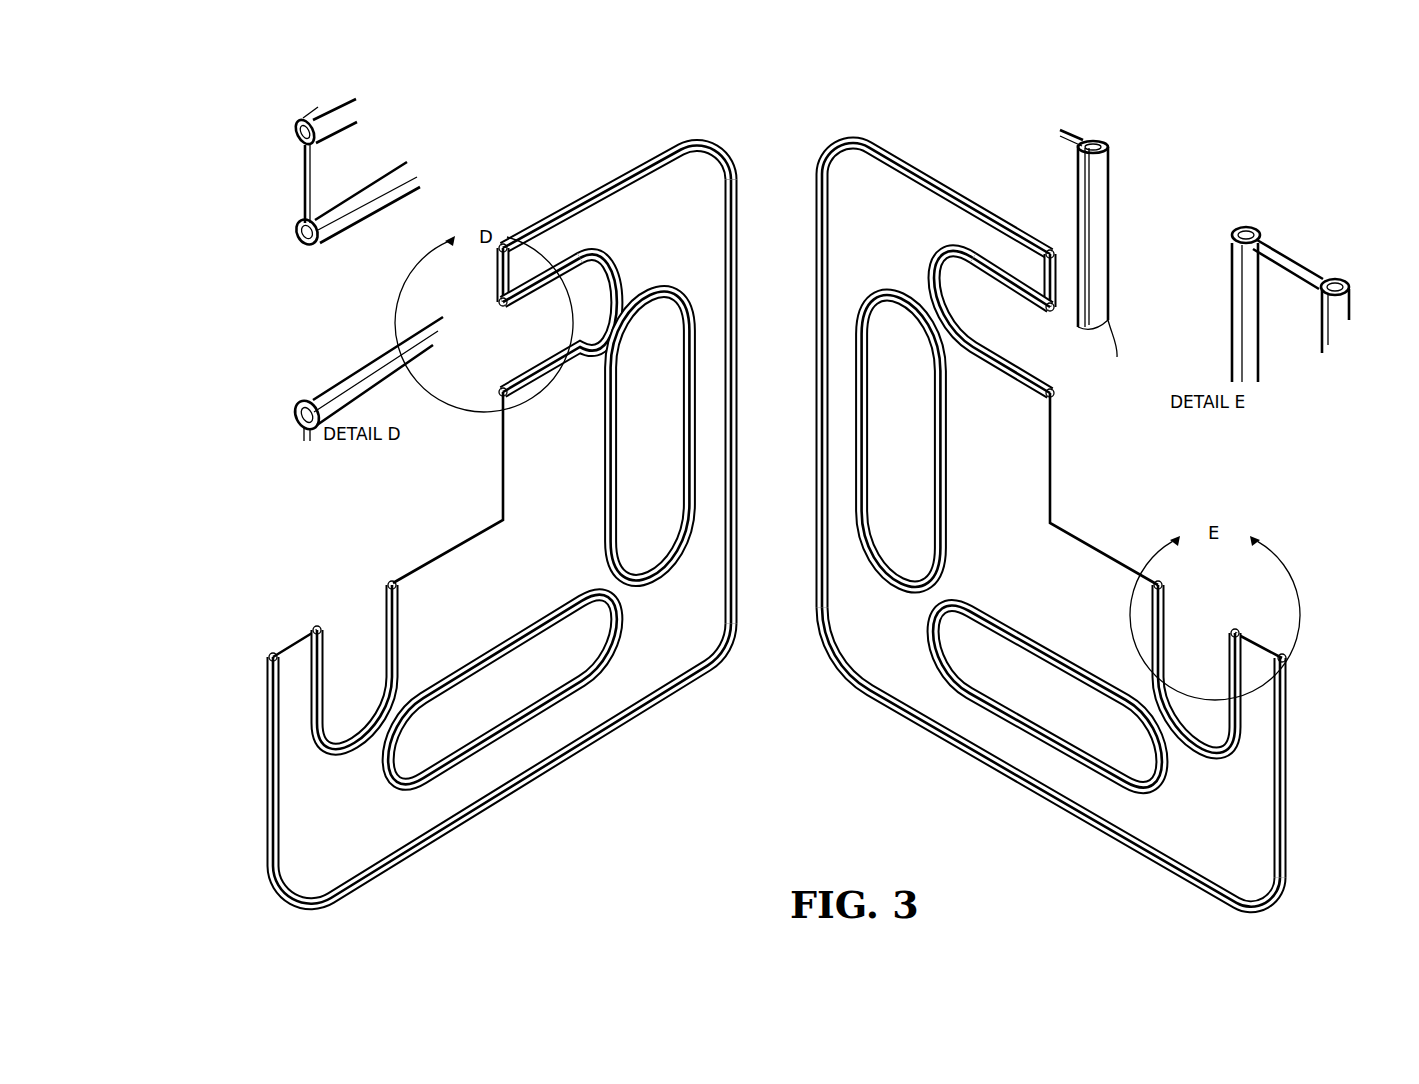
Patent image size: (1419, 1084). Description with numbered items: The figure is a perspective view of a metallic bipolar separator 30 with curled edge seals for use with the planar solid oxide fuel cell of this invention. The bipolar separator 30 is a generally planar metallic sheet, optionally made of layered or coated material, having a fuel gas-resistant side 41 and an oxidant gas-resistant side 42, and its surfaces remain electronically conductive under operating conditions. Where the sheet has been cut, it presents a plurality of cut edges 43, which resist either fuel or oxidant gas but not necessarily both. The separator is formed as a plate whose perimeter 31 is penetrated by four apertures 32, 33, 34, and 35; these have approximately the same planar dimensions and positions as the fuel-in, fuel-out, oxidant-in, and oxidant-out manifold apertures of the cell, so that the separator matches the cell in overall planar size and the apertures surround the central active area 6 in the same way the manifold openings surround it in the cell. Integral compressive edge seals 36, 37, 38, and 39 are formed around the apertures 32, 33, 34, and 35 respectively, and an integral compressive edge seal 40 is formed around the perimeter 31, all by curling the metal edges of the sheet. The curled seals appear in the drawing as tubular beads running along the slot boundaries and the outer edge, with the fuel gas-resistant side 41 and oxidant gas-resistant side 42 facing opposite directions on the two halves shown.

The central active area 6 is at (510, 565).
The bipolar separator 30 is at (668, 124).
The perimeter 31 is at (607, 180).
The aperture 32 is at (355, 618).
The aperture 33 is at (667, 447).
The aperture 34 is at (538, 695).
The aperture 35 is at (515, 330).
The integral compressive edge seal 36 is at (388, 588).
The integral compressive edge seal 37 is at (690, 377).
The integral compressive edge seal 38 is at (478, 757).
The integral compressive edge seal 39 is at (358, 222).
The integral compressive edge seal 40 is at (298, 120).
The fuel gas-resistant side 41 is at (837, 263).
The oxidant gas-resistant side 42 is at (715, 245).
The cut edges 43 is at (1080, 137).